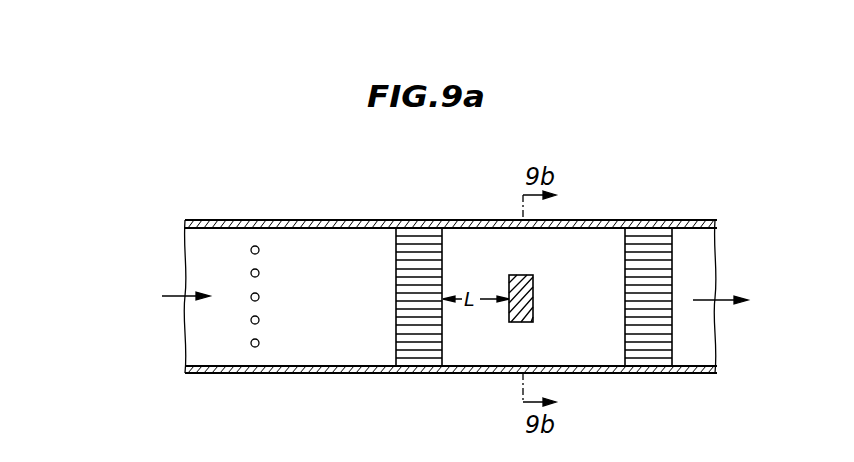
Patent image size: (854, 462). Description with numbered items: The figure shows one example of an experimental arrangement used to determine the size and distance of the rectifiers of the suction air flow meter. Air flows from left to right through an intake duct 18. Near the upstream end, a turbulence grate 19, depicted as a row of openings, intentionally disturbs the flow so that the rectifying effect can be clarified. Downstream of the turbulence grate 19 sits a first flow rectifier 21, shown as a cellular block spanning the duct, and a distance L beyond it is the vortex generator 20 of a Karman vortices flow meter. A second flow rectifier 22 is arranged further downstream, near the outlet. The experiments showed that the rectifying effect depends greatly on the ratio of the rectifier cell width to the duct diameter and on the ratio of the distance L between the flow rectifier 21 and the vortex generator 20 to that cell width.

The intake duct 18 is at (350, 221).
The turbulence grate 19 is at (260, 273).
The vortex generator 20 is at (530, 322).
The flow rectifier 21 is at (427, 347).
The flow rectifier 22 is at (650, 355).